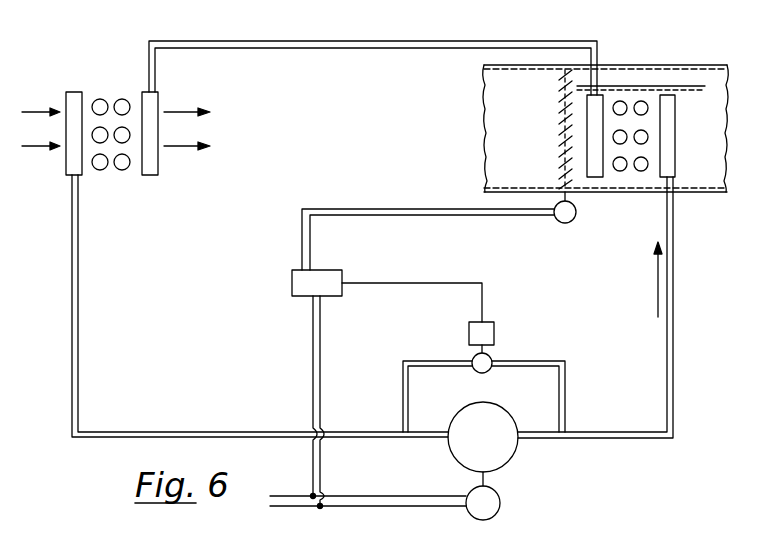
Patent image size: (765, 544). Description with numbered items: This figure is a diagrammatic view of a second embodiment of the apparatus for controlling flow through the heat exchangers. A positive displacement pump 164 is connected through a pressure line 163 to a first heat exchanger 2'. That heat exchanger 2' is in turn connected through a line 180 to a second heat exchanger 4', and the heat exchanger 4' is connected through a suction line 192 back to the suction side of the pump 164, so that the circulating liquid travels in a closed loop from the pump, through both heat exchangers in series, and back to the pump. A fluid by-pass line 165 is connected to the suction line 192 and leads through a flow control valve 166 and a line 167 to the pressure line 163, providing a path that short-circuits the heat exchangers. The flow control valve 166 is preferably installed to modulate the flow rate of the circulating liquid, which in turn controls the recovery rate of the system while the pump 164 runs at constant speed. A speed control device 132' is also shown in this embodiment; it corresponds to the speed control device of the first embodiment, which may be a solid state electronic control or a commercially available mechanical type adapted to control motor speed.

The heat exchanger 4' is at (116, 106).
The heat exchanger 2' is at (606, 116).
The line 180 is at (333, 41).
The pressure line 163 is at (673, 272).
The suction line 192 is at (78, 341).
The positive displacement pump 164 is at (512, 458).
The fluid by-pass line 165 is at (403, 397).
The line 167 is at (517, 360).
The flow control valve 166 is at (472, 357).
The speed control device 132' is at (423, 359).